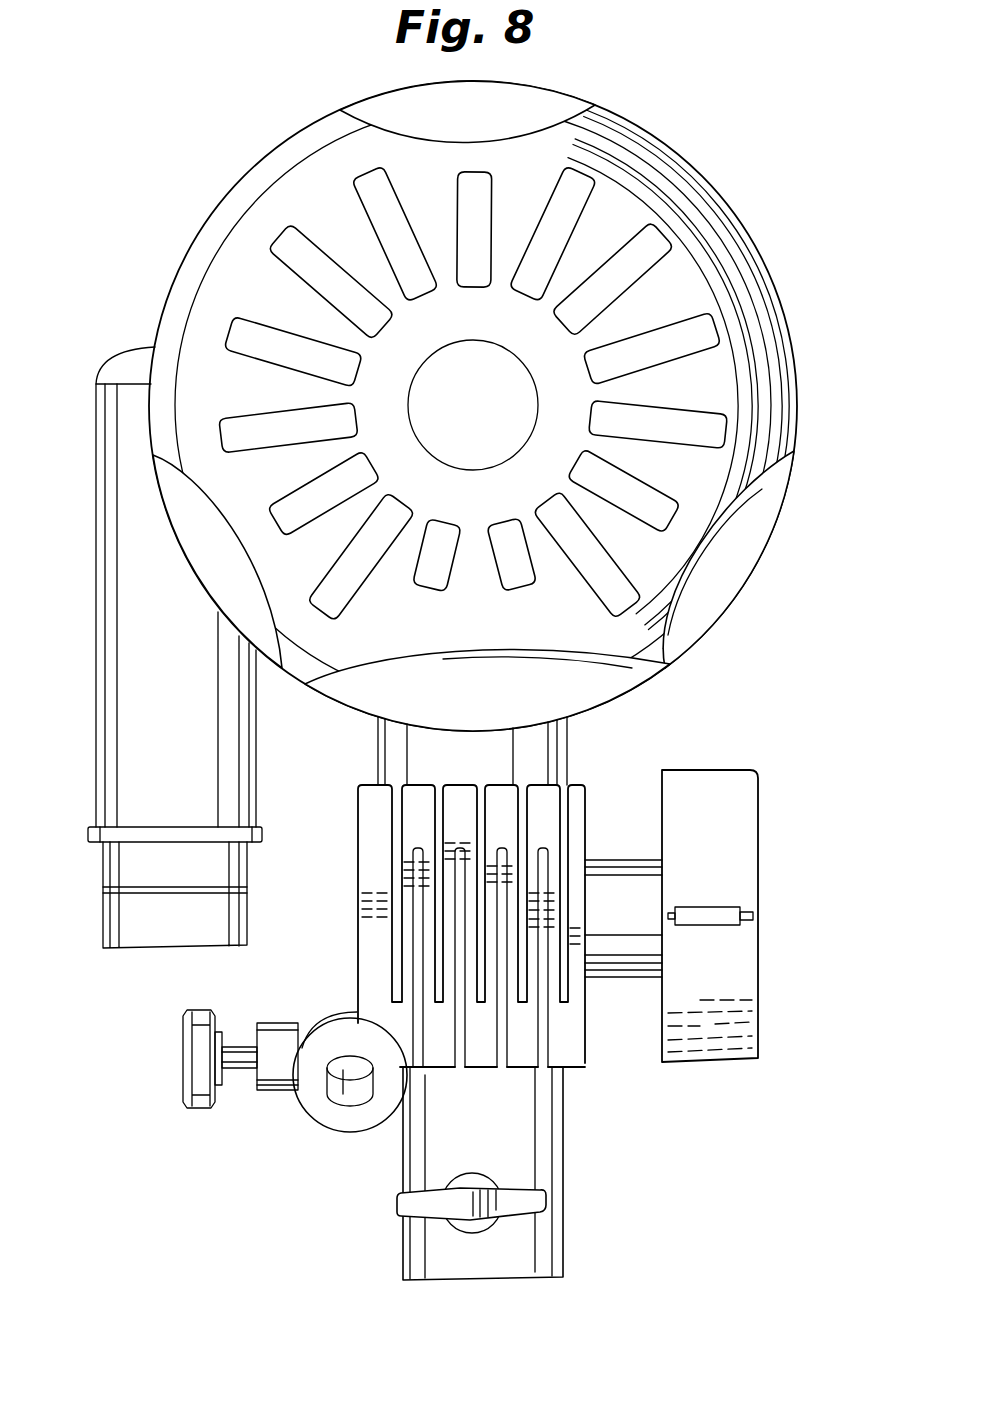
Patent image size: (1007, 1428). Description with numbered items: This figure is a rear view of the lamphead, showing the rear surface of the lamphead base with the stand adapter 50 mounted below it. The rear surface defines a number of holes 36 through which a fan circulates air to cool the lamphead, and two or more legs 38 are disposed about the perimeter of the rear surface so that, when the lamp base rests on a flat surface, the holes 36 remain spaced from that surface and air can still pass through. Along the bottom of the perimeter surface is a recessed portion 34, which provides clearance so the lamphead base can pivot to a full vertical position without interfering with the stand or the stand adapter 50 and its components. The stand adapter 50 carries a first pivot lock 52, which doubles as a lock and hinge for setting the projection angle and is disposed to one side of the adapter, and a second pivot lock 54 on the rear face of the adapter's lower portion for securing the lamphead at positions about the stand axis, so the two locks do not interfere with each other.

The recessed portion 34 is at (567, 697).
The holes 36 is at (686, 322).
The legs 38 is at (557, 103).
The stand adapter 50 is at (190, 727).
The first pivot lock 52 is at (762, 820).
The second pivot lock 54 is at (478, 1172).